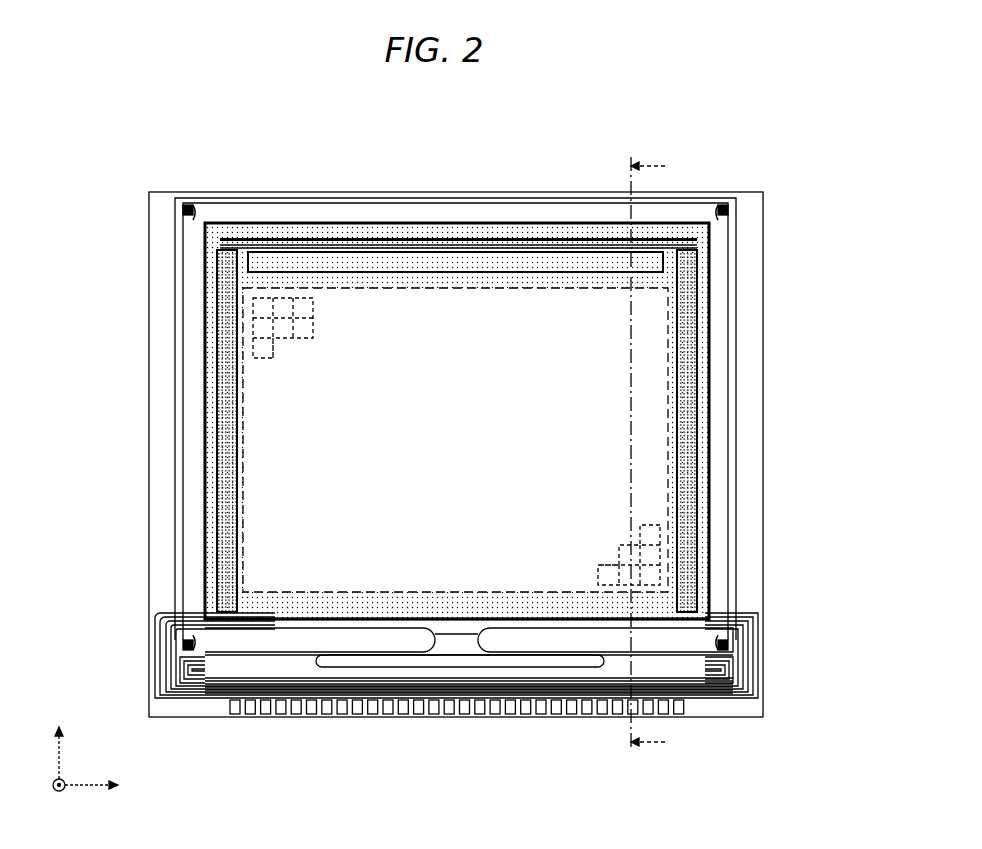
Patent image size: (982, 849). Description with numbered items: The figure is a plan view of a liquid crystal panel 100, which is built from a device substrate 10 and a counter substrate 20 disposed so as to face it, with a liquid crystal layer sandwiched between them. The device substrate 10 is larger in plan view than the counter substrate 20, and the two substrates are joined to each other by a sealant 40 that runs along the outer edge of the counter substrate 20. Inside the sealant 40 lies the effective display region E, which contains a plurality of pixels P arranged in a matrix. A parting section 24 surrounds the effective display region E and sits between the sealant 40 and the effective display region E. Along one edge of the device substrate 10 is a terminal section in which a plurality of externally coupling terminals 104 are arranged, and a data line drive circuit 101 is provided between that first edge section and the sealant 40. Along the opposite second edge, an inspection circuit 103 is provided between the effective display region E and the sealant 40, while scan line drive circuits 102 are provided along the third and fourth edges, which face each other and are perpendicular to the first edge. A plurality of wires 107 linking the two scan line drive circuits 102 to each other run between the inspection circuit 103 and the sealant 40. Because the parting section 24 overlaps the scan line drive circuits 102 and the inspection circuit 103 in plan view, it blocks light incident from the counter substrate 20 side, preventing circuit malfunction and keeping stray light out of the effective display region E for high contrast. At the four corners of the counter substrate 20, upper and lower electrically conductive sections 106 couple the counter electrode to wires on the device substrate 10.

The liquid crystal panel 100 is at (760, 150).
The device substrate 10 is at (264, 194).
The counter substrate 20 is at (362, 222).
The sealant 40 is at (718, 330).
The parting section 24 is at (330, 612).
The wires 107 is at (462, 236).
The inspection circuit 103 is at (543, 260).
The scan line drive circuits 102 is at (222, 363).
The upper and lower electrically conductive sections 106 is at (183, 210).
The effective display region E is at (672, 456).
The pixels P is at (275, 348).
The data line drive circuit 101 is at (218, 698).
The externally coupling terminals 104 is at (322, 700).